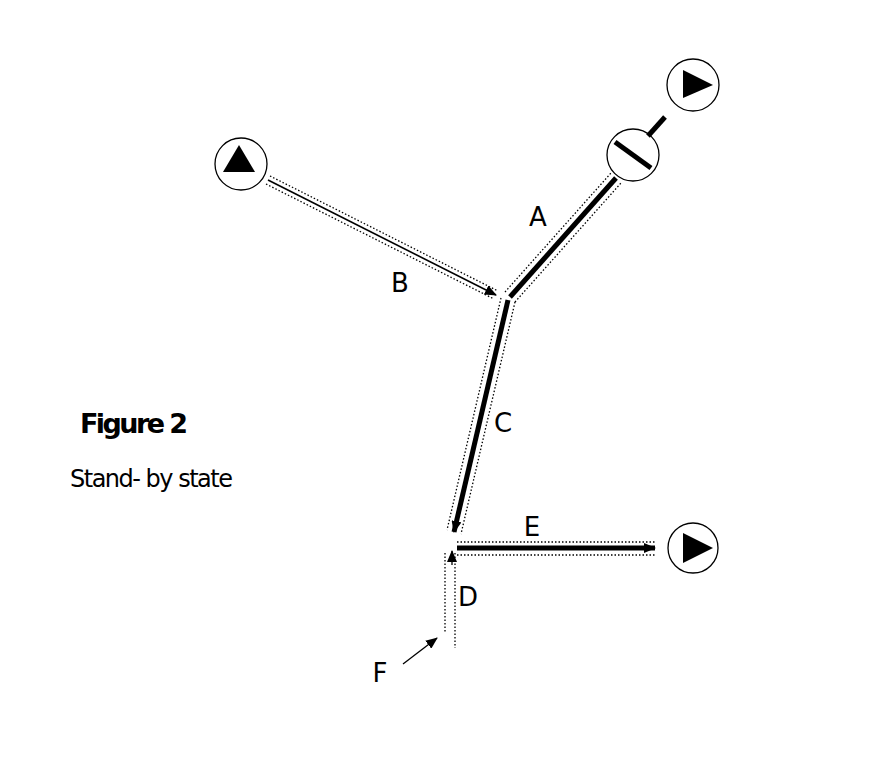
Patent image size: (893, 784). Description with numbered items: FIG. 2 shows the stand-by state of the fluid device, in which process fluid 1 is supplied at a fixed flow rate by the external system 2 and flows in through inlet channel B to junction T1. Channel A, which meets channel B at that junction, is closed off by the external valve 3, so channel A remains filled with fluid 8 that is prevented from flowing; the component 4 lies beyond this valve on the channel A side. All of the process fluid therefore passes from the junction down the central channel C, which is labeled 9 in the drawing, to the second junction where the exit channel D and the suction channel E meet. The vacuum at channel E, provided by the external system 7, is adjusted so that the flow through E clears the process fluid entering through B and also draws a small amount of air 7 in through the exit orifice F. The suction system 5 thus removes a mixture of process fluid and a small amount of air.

The process fluid 1 is at (318, 218).
The external system 2 is at (226, 193).
The external valve 3 is at (598, 140).
The second pump 4 is at (660, 75).
The suction system 5 is at (583, 520).
The external system 7 is at (700, 510).
The fluid 8 is at (583, 243).
The main pipe line 9 is at (457, 437).